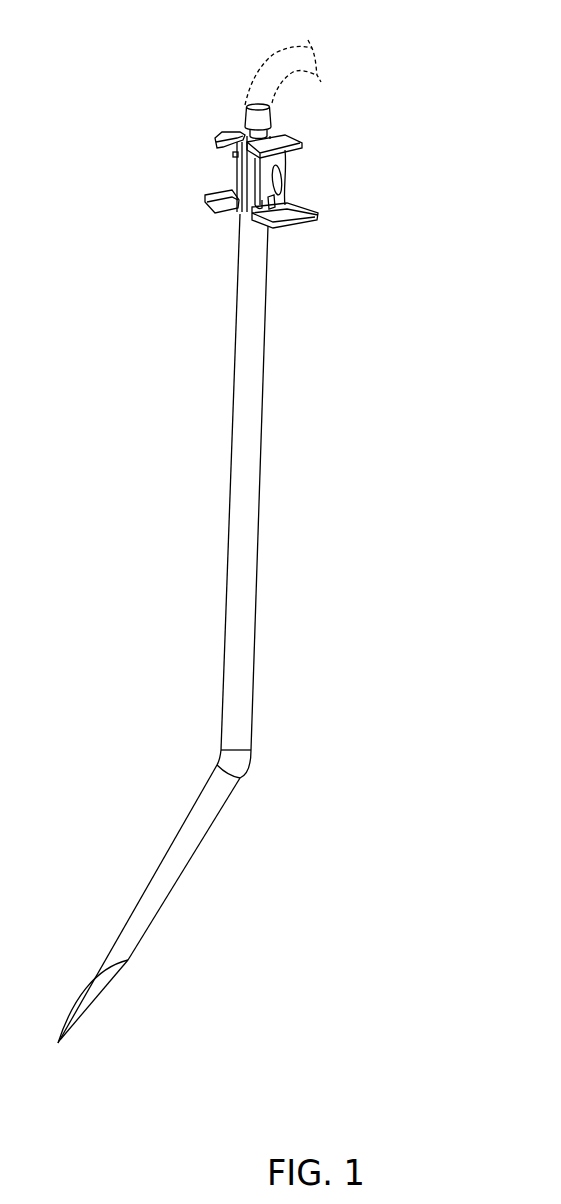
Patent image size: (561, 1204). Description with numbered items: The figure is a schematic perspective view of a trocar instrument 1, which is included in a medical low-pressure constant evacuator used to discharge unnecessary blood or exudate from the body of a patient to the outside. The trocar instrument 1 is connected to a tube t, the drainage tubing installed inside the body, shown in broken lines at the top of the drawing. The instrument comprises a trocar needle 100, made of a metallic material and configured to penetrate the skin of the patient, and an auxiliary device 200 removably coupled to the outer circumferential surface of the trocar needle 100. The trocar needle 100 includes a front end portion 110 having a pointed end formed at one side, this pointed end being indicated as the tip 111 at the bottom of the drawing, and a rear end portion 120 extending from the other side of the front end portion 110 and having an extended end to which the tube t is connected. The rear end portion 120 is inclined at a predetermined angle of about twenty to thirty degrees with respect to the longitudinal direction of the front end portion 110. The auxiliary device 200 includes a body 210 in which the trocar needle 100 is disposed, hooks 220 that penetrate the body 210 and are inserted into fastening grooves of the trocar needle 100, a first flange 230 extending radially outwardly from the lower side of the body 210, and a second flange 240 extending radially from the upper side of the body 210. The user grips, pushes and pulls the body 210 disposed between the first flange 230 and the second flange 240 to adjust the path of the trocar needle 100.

The trocar instrument 1 is at (187, 71).
The tube t is at (277, 63).
The trocar needle 100 is at (237, 643).
The front end portion 110 is at (203, 919).
The needle tip 111 is at (68, 1032).
The rear end portion 120 is at (242, 686).
The auxiliary device 200 is at (343, 180).
The body 210 is at (285, 175).
The hooks 220 is at (281, 200).
The first flange 230 is at (331, 227).
The second flange 240 is at (300, 145).